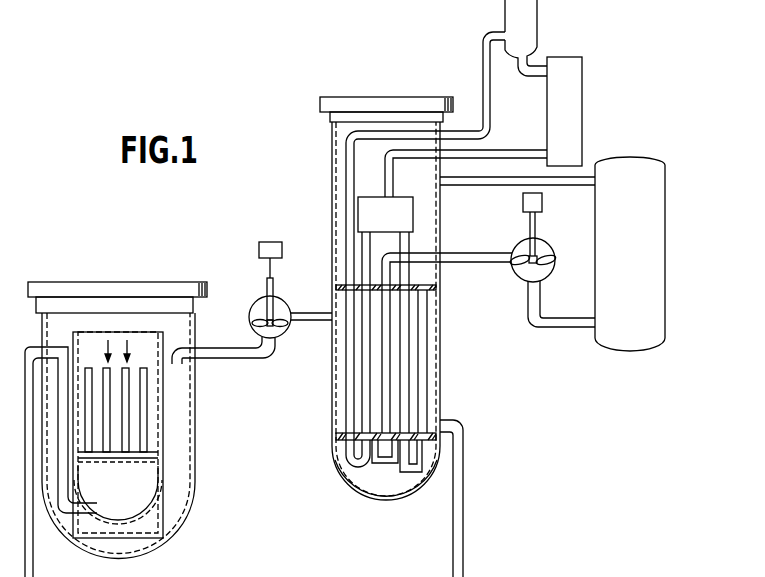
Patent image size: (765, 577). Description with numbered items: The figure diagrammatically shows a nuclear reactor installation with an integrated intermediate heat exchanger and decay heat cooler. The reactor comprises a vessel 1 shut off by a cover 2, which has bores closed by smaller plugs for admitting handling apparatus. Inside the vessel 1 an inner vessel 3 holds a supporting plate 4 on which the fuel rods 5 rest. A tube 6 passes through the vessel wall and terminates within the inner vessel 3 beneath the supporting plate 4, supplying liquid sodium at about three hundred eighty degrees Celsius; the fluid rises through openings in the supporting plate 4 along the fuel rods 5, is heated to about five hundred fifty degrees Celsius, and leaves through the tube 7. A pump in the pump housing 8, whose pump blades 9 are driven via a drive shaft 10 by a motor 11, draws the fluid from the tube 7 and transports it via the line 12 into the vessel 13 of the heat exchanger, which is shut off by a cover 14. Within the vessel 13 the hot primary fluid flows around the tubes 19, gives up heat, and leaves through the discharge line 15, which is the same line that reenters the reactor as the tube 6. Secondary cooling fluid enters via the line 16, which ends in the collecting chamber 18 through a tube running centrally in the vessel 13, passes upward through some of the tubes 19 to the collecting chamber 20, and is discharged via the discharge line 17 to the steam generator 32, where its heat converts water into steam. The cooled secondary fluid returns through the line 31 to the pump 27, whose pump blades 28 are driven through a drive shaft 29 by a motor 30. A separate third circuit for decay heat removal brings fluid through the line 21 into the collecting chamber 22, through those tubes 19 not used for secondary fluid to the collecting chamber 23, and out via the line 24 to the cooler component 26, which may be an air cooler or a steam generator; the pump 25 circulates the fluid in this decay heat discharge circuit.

The vessel 1 is at (200, 427).
The cover 2 is at (120, 290).
The inner vessel 3 is at (163, 437).
The supporting plate 4 is at (148, 458).
The fuel rods 5 is at (117, 347).
The tube 6 is at (33, 350).
The tube 7 is at (230, 359).
The pump housing 8 is at (256, 308).
The pump blades 9 is at (284, 328).
The drive shaft 10 is at (268, 267).
The motor 11 is at (267, 243).
The line 12 is at (309, 312).
The vessel 13 is at (333, 188).
The cover 14 is at (368, 108).
The discharge line 15 is at (447, 422).
The line 16 is at (469, 263).
The discharge line 17 is at (477, 185).
The collecting chamber 18 is at (403, 488).
The tubes 19 is at (425, 362).
The collecting chamber 20 is at (425, 230).
The line 21 is at (464, 136).
The collecting chamber 22 is at (368, 466).
The collecting chamber 23 is at (373, 212).
The line 24 is at (517, 150).
The pump 25 is at (527, 20).
The cooler component 26 is at (566, 107).
The pump 27 is at (515, 279).
The pump blades 28 is at (550, 270).
The drive shaft 29 is at (538, 227).
The motor 30 is at (523, 208).
The line 31 is at (557, 328).
The steam generator 32 is at (629, 333).